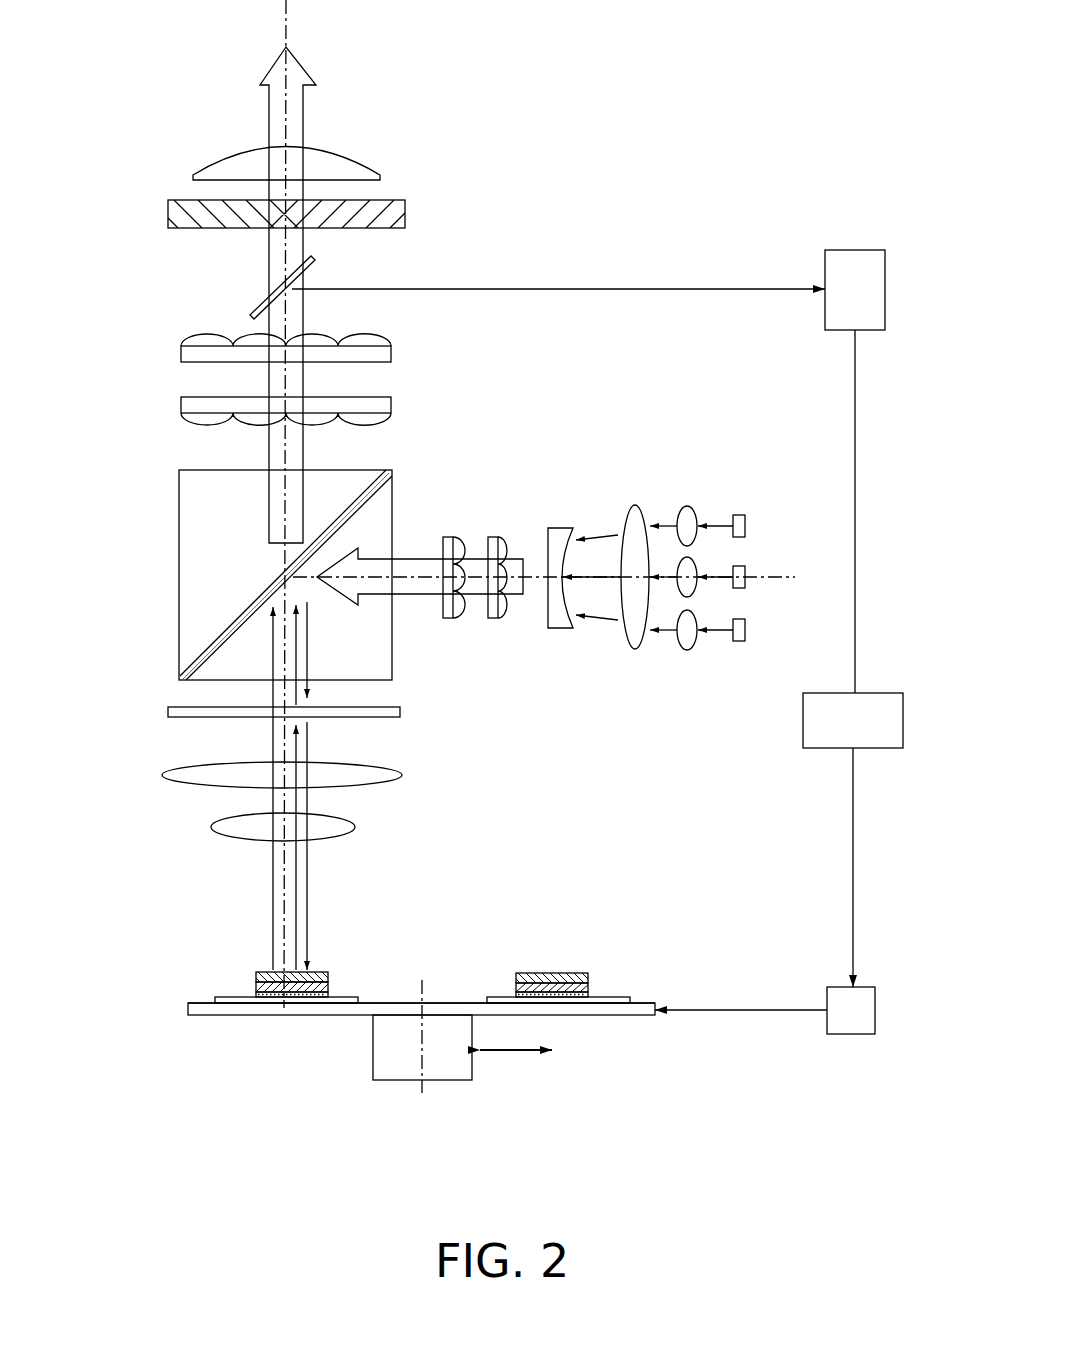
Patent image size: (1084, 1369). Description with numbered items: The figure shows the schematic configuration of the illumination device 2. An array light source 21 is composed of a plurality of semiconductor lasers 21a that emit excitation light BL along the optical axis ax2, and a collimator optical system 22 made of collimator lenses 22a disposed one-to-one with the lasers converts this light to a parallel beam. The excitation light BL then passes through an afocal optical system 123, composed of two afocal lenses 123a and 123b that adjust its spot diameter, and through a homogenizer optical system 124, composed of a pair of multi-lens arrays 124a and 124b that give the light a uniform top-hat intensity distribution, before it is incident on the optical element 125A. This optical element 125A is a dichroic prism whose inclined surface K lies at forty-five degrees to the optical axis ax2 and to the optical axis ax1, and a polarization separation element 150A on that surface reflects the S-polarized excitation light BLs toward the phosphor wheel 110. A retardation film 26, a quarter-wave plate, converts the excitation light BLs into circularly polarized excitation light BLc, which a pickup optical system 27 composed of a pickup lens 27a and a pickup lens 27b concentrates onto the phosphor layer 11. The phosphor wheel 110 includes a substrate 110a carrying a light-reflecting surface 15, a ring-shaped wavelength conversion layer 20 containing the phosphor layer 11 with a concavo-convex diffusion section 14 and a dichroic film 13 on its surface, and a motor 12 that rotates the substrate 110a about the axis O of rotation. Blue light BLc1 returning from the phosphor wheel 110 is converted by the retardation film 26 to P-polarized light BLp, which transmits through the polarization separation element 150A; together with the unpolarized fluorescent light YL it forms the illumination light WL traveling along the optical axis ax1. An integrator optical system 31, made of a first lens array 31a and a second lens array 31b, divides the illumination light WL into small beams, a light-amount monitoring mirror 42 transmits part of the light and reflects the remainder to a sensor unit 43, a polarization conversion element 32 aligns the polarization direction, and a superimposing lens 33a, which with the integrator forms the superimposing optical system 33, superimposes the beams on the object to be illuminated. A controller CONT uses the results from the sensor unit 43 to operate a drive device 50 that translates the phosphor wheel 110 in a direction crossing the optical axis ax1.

The illumination device 2 is at (695, 90).
The superimposing optical system 33 is at (165, 172).
The superimposing lens 33a is at (380, 166).
The polarization conversion element 32 is at (405, 214).
The light-amount monitoring mirror 42 is at (262, 300).
The sensor unit 43 is at (845, 265).
The integrator optical system 31 is at (352, 371).
The first lens array 31a is at (391, 405).
The second lens array 31b is at (391, 356).
The optical element 125A is at (179, 502).
The polarization separation element 150A is at (265, 588).
The inclined surface K is at (250, 605).
The homogenizer optical system 124 is at (474, 527).
The multi-lens array 124a is at (493, 537).
The multi-lens array 124b is at (445, 537).
The afocal optical system 123 is at (603, 525).
The afocal lens 123a is at (634, 506).
The afocal lens 123b is at (560, 527).
The collimator optical system 22 is at (682, 557).
The collimator lens 22a is at (687, 651).
The array light source 21 is at (736, 563).
The semiconductor laser 21a is at (738, 642).
The retardation film 26 is at (400, 711).
The pickup optical system 27 is at (350, 791).
The pickup lens 27a is at (402, 773).
The pickup lens 27b is at (355, 828).
The wavelength conversion layer 20 is at (452, 933).
The dichroic film 13 is at (565, 975).
The diffusion section 14 is at (590, 986).
The phosphor layer 11 is at (590, 993).
The light-reflecting surface 15 is at (615, 997).
The phosphor wheel 110 is at (175, 1013).
The substrate 110a is at (222, 1010).
The motor 12 is at (463, 1070).
The drive device 50 is at (845, 1022).
The controller CONT is at (878, 710).
The axis of rotation O is at (423, 1090).
The optical axis ax1 is at (289, 10).
The optical axis ax2 is at (775, 574).
The illumination light WL is at (269, 103).
The excitation light BL is at (414, 595).
The P-polarized light BLp is at (296, 663).
The excitation light BLs is at (300, 662).
The excitation light BLc is at (307, 872).
The blue light BLc1 is at (292, 862).
The fluorescent light YL is at (273, 742).